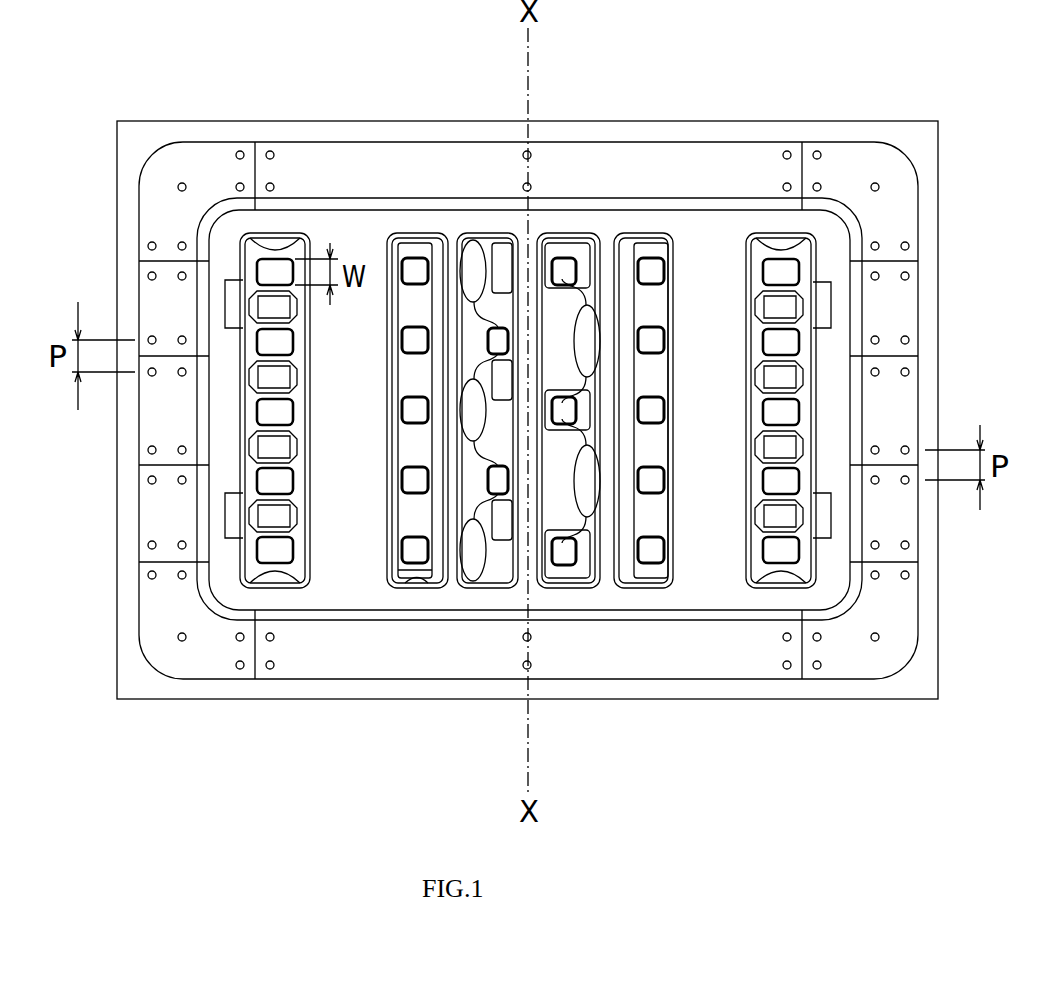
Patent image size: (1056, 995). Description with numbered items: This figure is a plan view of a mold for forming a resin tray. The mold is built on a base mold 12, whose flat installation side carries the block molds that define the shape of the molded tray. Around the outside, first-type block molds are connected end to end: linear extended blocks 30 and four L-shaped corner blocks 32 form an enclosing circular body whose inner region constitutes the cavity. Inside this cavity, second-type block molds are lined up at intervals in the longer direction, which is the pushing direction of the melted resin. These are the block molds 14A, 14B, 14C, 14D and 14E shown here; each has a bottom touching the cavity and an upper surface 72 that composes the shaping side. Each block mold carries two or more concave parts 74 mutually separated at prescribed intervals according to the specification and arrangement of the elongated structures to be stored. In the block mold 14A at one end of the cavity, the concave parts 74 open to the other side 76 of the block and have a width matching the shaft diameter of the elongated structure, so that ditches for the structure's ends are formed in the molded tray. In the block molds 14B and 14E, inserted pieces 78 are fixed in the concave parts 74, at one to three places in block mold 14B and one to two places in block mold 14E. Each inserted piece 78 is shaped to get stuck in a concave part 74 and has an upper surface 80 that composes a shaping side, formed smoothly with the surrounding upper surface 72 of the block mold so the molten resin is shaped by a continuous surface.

The base mold 12 is at (128, 465).
The block mold 14A is at (282, 233).
The block mold 14B is at (392, 233).
The block mold 14C is at (490, 240).
The block mold 14D is at (575, 240).
The block mold 14E is at (655, 240).
The extended block 30 is at (157, 305).
The corner block 32 is at (215, 165).
The upper surface 72 is at (240, 415).
The concave part 74 is at (438, 240).
The side 76 is at (310, 238).
The inserted piece 78 is at (413, 262).
The upper surface 80 is at (405, 583).